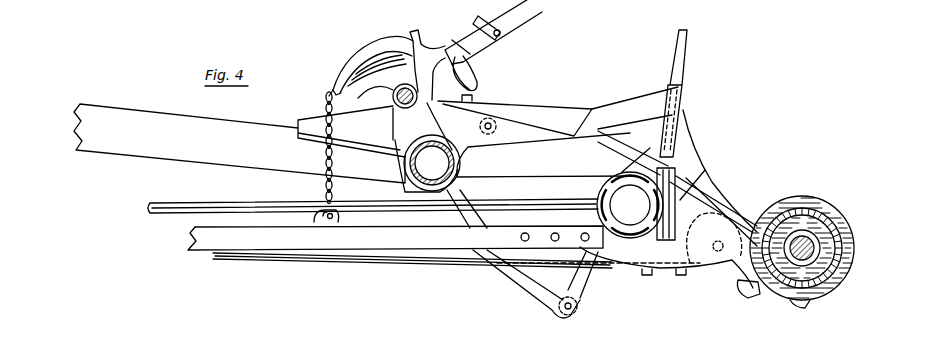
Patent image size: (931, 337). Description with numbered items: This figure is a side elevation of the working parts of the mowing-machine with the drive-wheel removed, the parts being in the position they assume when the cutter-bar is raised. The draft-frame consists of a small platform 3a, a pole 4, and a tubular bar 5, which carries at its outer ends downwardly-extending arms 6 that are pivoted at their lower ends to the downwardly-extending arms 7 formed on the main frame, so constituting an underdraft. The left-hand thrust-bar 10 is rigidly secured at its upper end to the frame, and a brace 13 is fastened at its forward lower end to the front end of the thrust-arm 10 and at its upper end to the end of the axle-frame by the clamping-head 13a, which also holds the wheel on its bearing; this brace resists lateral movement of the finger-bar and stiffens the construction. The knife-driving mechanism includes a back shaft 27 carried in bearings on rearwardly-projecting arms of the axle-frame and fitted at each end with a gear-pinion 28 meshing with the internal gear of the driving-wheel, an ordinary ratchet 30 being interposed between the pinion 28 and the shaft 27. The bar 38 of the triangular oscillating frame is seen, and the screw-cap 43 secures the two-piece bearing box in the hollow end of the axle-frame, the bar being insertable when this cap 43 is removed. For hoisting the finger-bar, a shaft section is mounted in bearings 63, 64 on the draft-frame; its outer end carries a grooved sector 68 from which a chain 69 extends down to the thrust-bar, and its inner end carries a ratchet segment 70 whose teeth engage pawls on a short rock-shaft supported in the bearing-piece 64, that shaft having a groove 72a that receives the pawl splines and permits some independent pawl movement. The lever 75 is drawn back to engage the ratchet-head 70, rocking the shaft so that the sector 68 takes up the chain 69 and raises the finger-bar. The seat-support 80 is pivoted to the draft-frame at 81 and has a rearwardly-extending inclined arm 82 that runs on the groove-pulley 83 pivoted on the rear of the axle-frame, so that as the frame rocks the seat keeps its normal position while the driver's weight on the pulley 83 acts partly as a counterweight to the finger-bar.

The pole 4 is at (239, 143).
The bar 5 is at (458, 168).
The downwardly-extending arms 6 is at (510, 278).
The downwardly-extending arms 7 is at (585, 282).
The thrust-bar 10 is at (418, 259).
The brace 13 is at (395, 238).
The clamping-head 13a is at (629, 250).
The back shaft 27 is at (805, 256).
The gear-pinions 28 is at (802, 228).
The ratchet 30 is at (781, 210).
The bar 38 is at (222, 208).
The screw-cap 43 is at (648, 222).
The bearing 63 is at (393, 97).
The bearing 64 is at (414, 128).
The grooved sector 68 is at (364, 56).
The chain 69 is at (327, 111).
The ratchet segment 70 is at (472, 81).
The groove 72a is at (419, 46).
The lever 75 is at (480, 30).
The seat-support 80 is at (633, 112).
The pivot 81 is at (490, 125).
The inclined arm 82 is at (692, 147).
The groove-pulley 83 is at (718, 252).
The small platform 3a is at (546, 130).